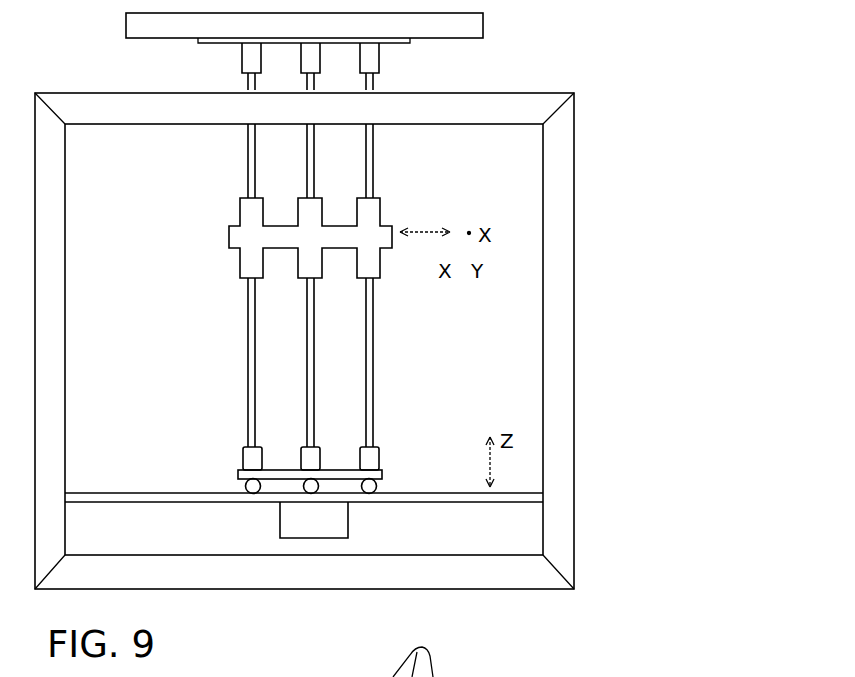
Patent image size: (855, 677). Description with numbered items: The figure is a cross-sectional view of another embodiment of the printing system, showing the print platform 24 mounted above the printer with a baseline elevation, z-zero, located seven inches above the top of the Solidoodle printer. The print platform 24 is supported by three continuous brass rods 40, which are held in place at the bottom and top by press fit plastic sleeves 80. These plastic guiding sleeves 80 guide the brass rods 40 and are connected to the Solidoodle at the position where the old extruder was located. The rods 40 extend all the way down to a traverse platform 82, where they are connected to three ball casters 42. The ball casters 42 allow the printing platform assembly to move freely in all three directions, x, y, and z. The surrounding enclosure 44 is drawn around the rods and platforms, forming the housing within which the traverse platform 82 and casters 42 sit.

The print platform 24 is at (483, 27).
The brass rods 40 is at (247, 371).
The ball casters 42 is at (244, 485).
The housing 44 is at (563, 310).
The plastic sleeves 80 is at (379, 62).
The traverse platform 82 is at (98, 491).